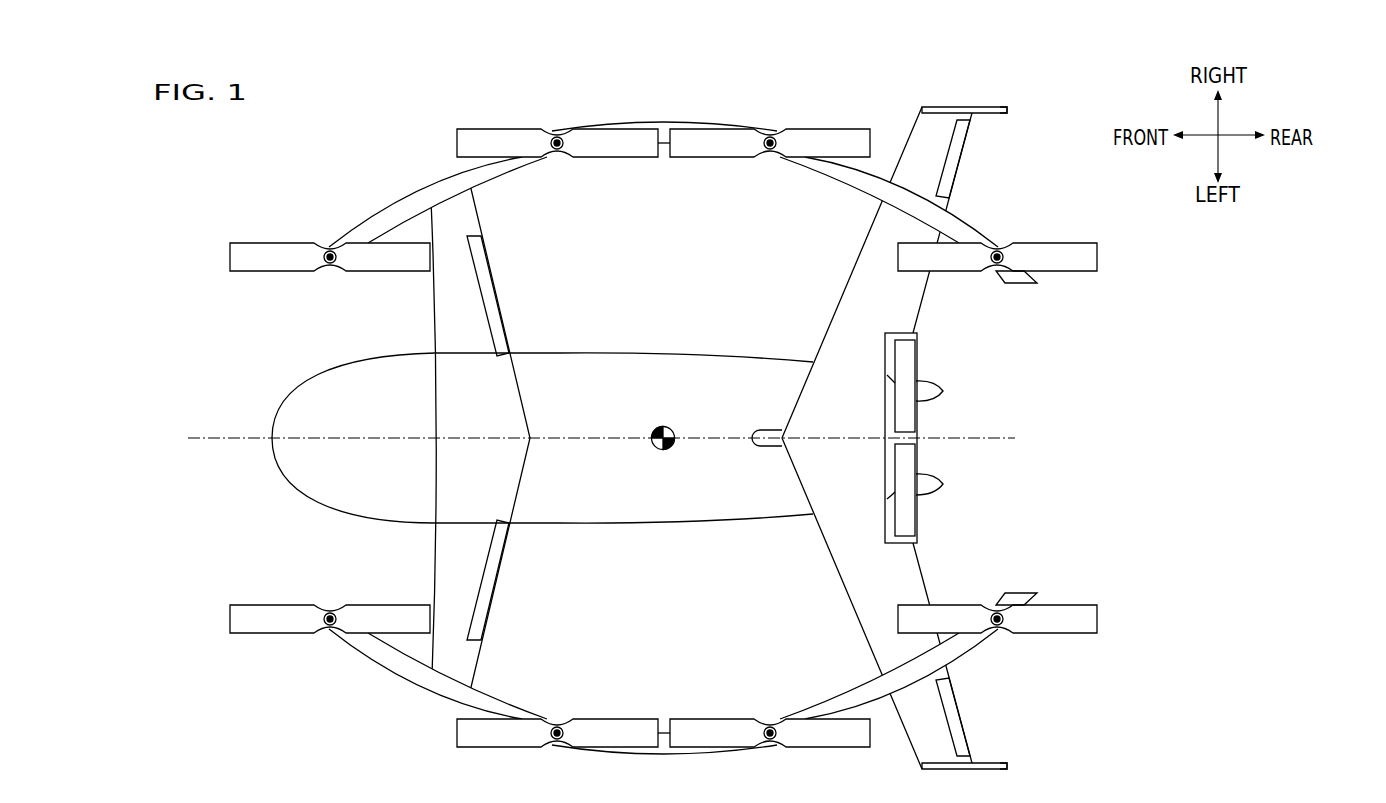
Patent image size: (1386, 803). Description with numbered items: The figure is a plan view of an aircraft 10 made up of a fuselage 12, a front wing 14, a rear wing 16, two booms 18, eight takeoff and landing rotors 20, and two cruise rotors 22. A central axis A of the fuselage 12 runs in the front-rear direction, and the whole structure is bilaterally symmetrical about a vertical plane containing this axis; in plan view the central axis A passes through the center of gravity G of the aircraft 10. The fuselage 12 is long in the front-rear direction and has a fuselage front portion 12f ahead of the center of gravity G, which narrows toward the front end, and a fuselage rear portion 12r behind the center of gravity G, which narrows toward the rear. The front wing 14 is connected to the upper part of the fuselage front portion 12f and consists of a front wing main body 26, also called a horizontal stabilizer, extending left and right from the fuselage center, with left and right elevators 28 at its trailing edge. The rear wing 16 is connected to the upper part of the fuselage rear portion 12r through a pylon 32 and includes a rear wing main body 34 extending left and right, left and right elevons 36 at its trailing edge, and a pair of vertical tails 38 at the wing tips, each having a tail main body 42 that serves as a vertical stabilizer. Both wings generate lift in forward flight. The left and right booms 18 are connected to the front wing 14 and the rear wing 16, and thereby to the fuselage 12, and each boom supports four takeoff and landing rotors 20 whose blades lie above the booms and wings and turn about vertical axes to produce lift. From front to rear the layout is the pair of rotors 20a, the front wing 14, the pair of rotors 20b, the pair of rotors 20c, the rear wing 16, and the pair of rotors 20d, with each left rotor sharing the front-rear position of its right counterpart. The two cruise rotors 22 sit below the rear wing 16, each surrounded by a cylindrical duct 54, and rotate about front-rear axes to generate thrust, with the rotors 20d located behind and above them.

The aircraft 10 is at (217, 156).
The fuselage 12 is at (591, 350).
The fuselage front portion 12f is at (289, 453).
The fuselage rear portion 12r is at (790, 372).
The front wing 14 is at (445, 438).
The rear wing 16 is at (918, 438).
The boom 18 is at (392, 198).
The takeoff and landing rotor 20 is at (650, 438).
The takeoff and landing rotor 20a is at (306, 439).
The takeoff and landing rotor 20b is at (535, 438).
The takeoff and landing rotor 20c is at (754, 438).
The takeoff and landing rotor 20d is at (1007, 439).
The cruise rotor 22 is at (934, 441).
The front wing main body 26 is at (450, 290).
The elevator 28 is at (483, 283).
The pylon 32 is at (755, 447).
The rear wing main body 34 is at (863, 297).
The elevon 36 is at (953, 149).
The vertical tail 38 is at (1010, 106).
The tail main body 42 is at (993, 114).
The cylindrical duct 54 is at (912, 347).
The central axis A is at (591, 439).
The center of gravity G is at (655, 448).